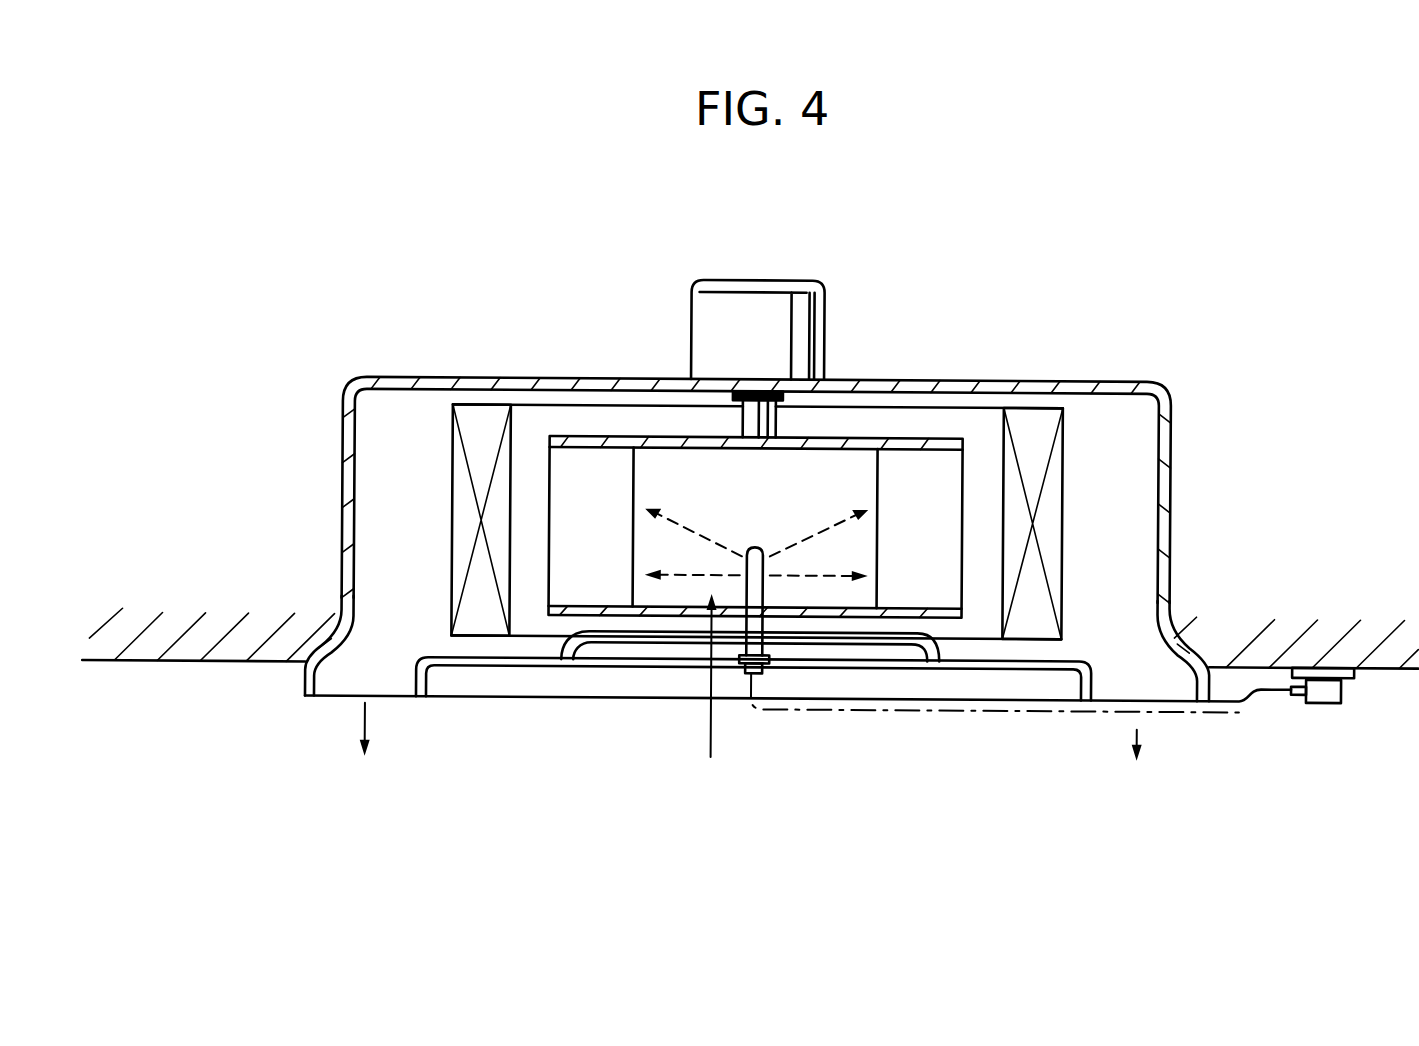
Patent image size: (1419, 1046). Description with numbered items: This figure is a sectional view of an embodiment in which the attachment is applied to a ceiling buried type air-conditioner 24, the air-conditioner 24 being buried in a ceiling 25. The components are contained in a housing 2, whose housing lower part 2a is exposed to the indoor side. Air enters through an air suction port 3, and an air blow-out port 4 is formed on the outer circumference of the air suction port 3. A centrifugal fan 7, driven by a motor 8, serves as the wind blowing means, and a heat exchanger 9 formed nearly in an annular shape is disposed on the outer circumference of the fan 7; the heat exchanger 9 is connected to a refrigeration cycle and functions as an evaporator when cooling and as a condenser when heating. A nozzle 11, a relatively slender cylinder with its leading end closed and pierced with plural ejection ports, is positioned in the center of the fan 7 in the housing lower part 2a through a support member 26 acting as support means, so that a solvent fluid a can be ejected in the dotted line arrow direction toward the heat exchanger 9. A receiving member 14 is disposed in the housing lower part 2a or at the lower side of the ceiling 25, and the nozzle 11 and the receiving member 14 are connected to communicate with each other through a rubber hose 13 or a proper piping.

The housing 2 is at (342, 514).
The housing lower part 2a is at (531, 667).
The air suction port 3 is at (680, 640).
The air blow-out port 4 is at (334, 699).
The centrifugal fan 7 is at (962, 505).
The motor 8 is at (823, 321).
The heat exchanger 9 is at (1062, 440).
The nozzle 11 is at (752, 582).
The rubber hose 13 is at (925, 712).
The receiving member 14 is at (1342, 690).
The ceiling buried type air-conditioner 24 is at (1185, 438).
The ceiling 25 is at (133, 664).
The support member 26 is at (613, 663).
The solvent fluid a is at (687, 523).